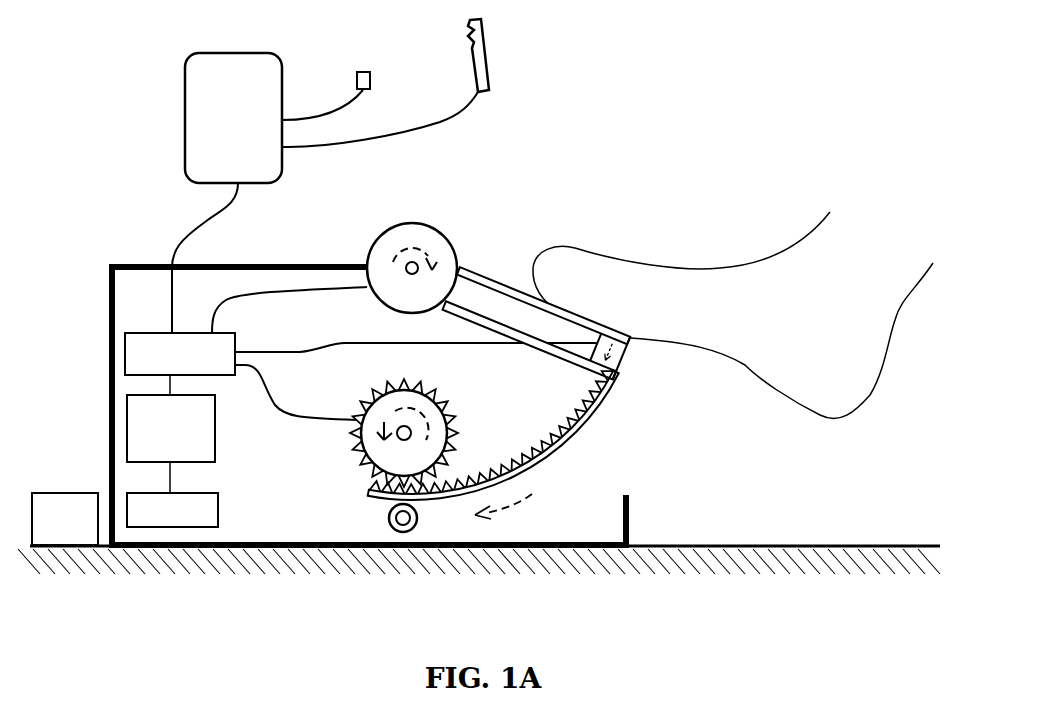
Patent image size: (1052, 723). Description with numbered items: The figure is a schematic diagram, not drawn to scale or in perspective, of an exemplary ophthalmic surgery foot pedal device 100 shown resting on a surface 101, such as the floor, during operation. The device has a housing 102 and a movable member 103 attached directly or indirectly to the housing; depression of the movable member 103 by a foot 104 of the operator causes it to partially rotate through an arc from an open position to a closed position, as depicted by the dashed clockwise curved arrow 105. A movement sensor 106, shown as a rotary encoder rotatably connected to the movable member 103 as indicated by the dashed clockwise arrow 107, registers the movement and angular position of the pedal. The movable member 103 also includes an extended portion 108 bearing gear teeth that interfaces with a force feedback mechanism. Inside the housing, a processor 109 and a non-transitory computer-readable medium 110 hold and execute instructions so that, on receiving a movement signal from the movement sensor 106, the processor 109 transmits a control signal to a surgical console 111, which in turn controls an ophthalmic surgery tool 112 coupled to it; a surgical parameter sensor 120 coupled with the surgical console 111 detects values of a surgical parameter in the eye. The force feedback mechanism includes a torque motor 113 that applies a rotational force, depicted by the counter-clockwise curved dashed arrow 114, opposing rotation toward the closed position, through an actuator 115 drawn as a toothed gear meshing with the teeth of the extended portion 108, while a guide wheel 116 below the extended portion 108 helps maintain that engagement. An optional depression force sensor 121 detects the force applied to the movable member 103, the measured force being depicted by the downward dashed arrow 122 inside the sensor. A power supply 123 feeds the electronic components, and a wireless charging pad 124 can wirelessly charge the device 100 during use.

The ophthalmic surgery foot pedal device 100 is at (663, 81).
The surface 101 is at (788, 545).
The housing 102 is at (147, 265).
The movable member 103 is at (492, 268).
The foot 104 is at (752, 258).
The dashed clockwise curved arrow 105 is at (520, 506).
The movement sensor 106 is at (452, 255).
The dashed clockwise arrow 107 is at (410, 240).
The extended portion 108 is at (527, 472).
The processor 109 is at (361, 353).
The non-transitory computer-readable medium 110 is at (171, 444).
The surgical console 111 is at (183, 66).
The ophthalmic surgery tool 112 is at (473, 62).
The torque motor 113 is at (438, 388).
The counter-clockwise curved dashed arrow 114 is at (395, 400).
The actuator 115 is at (452, 433).
The guide wheel 116 is at (388, 520).
The surgical parameter sensor 120 is at (355, 80).
The depression force sensor 121 is at (622, 352).
The downward dashed arrow 122 is at (622, 368).
The power supply 123 is at (172, 510).
The wireless charging pad 124 is at (65, 519).